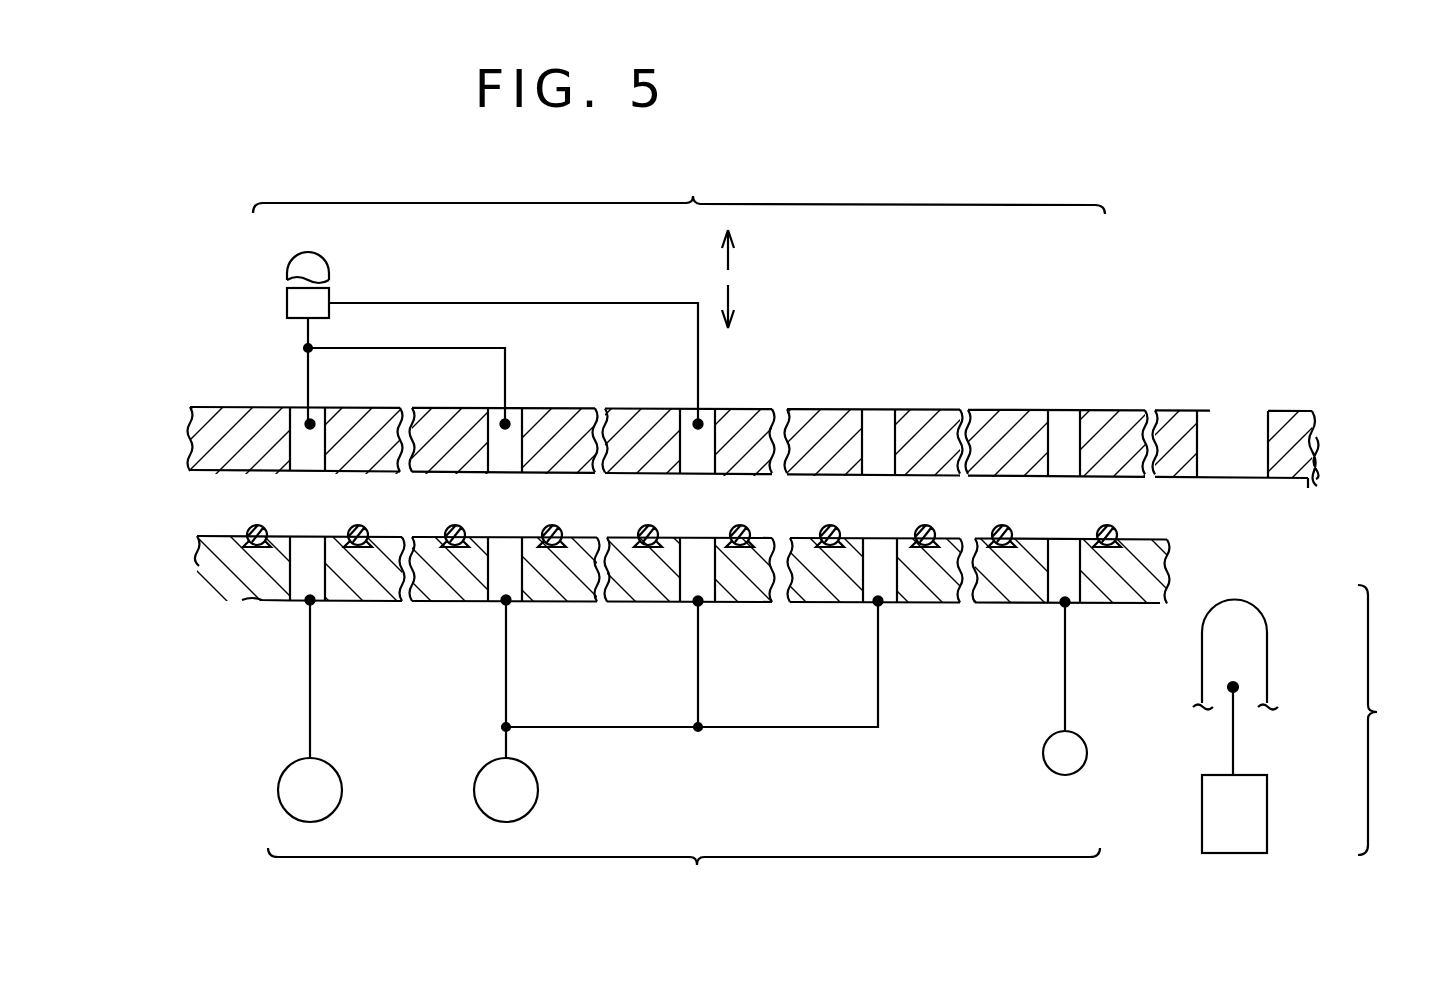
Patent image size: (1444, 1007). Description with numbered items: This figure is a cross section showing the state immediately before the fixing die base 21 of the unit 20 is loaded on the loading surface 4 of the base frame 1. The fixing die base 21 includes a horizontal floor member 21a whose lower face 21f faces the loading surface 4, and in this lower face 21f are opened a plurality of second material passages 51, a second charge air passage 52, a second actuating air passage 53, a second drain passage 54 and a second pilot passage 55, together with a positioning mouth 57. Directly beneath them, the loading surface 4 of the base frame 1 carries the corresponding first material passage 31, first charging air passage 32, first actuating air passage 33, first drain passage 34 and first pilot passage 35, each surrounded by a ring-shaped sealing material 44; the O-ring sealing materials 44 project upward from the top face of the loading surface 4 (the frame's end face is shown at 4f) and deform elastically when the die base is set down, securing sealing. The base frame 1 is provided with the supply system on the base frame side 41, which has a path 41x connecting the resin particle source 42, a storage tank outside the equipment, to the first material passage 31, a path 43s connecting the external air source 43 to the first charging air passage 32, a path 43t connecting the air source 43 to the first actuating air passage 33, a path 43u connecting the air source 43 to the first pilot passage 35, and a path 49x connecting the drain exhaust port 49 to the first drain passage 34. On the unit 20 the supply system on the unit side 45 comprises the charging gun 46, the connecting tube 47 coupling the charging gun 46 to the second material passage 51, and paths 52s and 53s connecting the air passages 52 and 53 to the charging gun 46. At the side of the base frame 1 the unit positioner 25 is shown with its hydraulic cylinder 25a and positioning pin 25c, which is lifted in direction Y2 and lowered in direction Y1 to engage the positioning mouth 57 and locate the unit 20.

The base frame 1 is at (186, 576).
The loading surface 4 is at (200, 538).
The end face of stationary member 4f is at (236, 537).
The unit 20 is at (190, 422).
The fixing die base 21 is at (243, 425).
The horizontal floor member 21a is at (260, 487).
The lower face 21f is at (275, 478).
The unit positioner 25 is at (1308, 720).
The hydraulic cylinder 25a is at (1254, 812).
The positioning pin 25c is at (1254, 652).
The first material passage 31 is at (298, 604).
The first charging air passage 32 is at (495, 604).
The first actuating air passage 33 is at (690, 604).
The first drain passage 34 is at (1058, 606).
The first pilot passage 35 is at (870, 605).
The supply system on the base frame side 41 is at (684, 875).
The path 41x is at (311, 716).
The resin particle source 42 is at (342, 790).
The air source 43 is at (538, 790).
The path 43s is at (508, 690).
The path 43t is at (699, 690).
The path 43u is at (879, 693).
The sealing material 44 is at (353, 526).
The supply system on the unit side 45 is at (679, 186).
The charging gun 46 is at (329, 316).
The connecting tube 47 is at (312, 352).
The drain exhaust port 49 is at (1087, 752).
The path 49x is at (1066, 693).
The second material passage 51 is at (318, 420).
The second charge air passage 52 is at (511, 420).
The path 52s is at (508, 352).
The second actuating air passage 53 is at (690, 413).
The path 53s is at (700, 360).
The second drain passage 54 is at (1062, 420).
The second pilot passage 55 is at (879, 411).
The positioning mouth 57 is at (1247, 430).
The arrow direction Y1 is at (728, 300).
The arrow direction Y2 is at (728, 262).